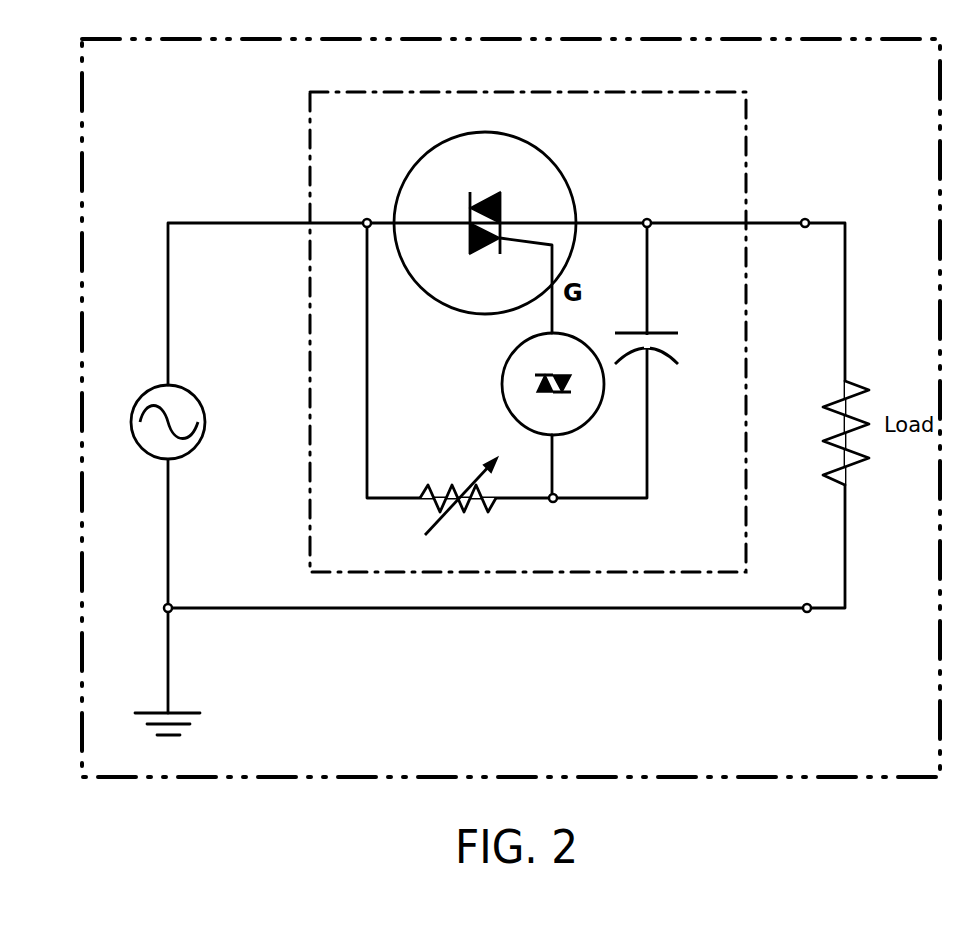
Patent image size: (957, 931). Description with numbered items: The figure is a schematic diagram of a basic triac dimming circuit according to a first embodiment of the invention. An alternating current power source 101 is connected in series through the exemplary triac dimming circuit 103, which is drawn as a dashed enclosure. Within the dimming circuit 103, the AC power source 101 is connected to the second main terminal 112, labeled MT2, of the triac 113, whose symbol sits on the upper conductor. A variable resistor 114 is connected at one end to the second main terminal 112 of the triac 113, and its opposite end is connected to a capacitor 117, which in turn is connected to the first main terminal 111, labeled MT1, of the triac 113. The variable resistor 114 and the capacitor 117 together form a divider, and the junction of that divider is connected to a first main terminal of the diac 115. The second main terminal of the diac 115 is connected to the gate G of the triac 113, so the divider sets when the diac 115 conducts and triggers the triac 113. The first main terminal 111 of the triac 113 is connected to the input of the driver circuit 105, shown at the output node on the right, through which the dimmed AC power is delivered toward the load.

The alternating current power source 101 is at (166, 442).
The triac dimming circuit 103 is at (528, 332).
The driver circuit 105 is at (811, 207).
The first main terminal 111 is at (620, 209).
The second main terminal 112 is at (361, 208).
The triac 113 is at (496, 218).
The variable resistor 114 is at (458, 506).
The diac 115 is at (555, 399).
The capacitor 117 is at (654, 368).